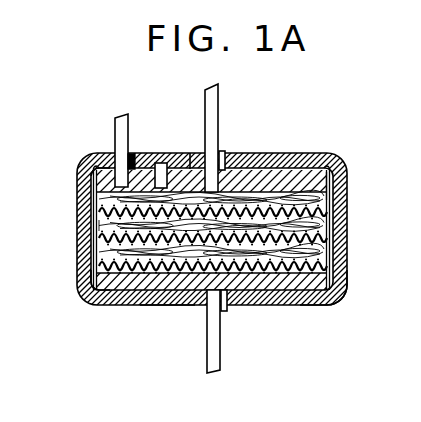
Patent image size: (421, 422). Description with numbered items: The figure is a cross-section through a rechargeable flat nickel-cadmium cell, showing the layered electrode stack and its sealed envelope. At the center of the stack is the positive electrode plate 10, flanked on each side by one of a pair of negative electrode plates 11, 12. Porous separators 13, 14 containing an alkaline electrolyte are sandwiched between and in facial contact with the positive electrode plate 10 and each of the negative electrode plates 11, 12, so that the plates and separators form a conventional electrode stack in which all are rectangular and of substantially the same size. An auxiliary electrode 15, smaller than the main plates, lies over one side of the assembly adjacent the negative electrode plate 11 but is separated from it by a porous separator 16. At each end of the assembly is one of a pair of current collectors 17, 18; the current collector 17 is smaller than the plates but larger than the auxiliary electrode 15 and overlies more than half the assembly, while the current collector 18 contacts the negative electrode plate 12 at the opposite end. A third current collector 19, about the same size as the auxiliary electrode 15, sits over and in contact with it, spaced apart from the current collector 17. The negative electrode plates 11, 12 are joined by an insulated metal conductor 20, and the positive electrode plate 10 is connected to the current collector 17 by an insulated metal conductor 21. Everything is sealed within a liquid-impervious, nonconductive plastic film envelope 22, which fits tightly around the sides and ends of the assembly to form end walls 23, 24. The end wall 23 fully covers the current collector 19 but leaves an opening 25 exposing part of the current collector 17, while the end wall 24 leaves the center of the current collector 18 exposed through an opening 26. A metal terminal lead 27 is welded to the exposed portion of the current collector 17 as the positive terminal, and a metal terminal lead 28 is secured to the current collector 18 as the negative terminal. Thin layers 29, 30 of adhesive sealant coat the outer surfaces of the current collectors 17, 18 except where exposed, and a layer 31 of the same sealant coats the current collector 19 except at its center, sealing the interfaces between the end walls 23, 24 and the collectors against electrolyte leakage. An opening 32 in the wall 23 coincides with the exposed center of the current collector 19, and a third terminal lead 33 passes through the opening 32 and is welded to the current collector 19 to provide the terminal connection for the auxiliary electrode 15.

The positive electrode plate 10 is at (322, 245).
The negative electrode plate 11 is at (322, 202).
The negative electrode plate 12 is at (312, 276).
The porous separator 13 is at (312, 225).
The porous separator 14 is at (318, 260).
The auxiliary electrode 15 is at (97, 198).
The porous separator 16 is at (98, 224).
The current collector 17 is at (303, 182).
The current collector 18 is at (165, 302).
The third current collector 19 is at (161, 165).
The insulated metal conductor 20 is at (93, 260).
The insulated metal conductor 21 is at (328, 195).
The plastic film envelope 22 is at (89, 282).
The end wall 23 is at (195, 160).
The end wall 24 is at (296, 303).
The opening 25 is at (223, 167).
The opening 26 is at (228, 308).
The metal terminal lead 27 is at (205, 96).
The metal terminal lead 28 is at (207, 333).
The layer of adhesive sealant 29 is at (263, 170).
The layer of adhesive sealant 30 is at (317, 303).
The layer of adhesive sealant 31 is at (92, 166).
The opening 32 is at (133, 168).
The third terminal lead 33 is at (115, 137).